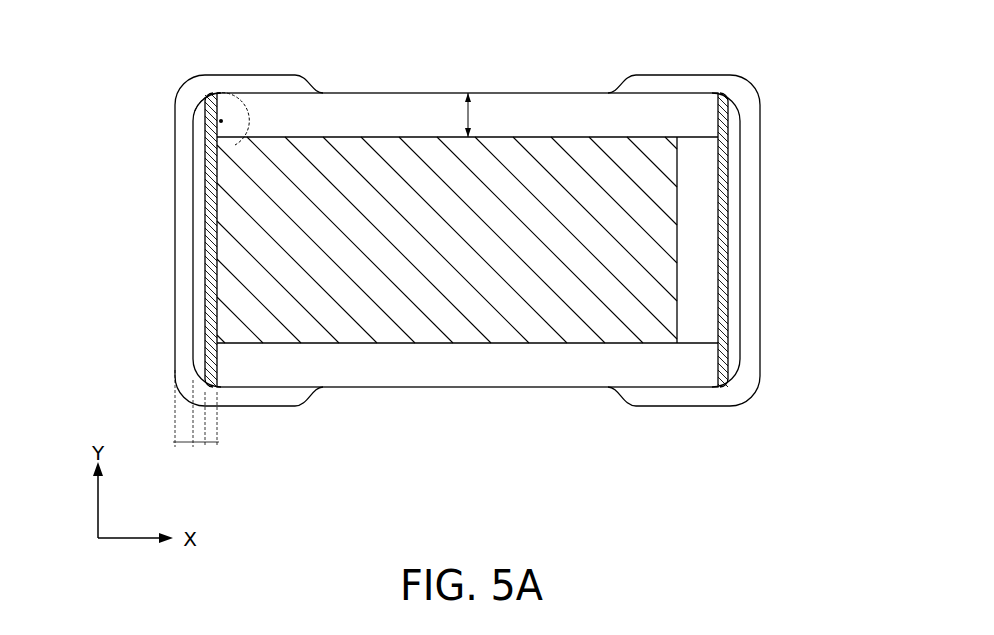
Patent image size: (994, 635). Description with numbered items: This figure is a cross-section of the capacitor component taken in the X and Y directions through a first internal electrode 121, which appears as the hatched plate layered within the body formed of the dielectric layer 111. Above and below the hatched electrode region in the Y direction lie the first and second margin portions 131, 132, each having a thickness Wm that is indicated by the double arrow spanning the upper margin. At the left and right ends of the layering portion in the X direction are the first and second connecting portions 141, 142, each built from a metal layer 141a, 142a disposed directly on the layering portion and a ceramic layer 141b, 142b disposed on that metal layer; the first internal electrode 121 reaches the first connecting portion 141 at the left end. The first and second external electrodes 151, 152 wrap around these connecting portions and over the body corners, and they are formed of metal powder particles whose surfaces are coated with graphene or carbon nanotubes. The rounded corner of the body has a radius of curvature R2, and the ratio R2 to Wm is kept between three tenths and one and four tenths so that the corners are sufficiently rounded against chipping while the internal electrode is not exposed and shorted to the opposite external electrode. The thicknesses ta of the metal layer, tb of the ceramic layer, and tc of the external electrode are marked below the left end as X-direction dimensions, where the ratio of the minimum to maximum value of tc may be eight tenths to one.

The dielectric layer 111 is at (698, 323).
The first internal electrode 121 is at (450, 320).
The first margin portion 131 is at (537, 362).
The second margin portion 132 is at (579, 112).
The first connecting portion 141 is at (98, 170).
The metal layer 141a is at (210, 184).
The ceramic layer 141b is at (198, 240).
The second connecting portion 142 is at (835, 170).
The metal layer 142a is at (723, 184).
The ceramic layer 142b is at (734, 238).
The first external electrode 151 is at (223, 88).
The second external electrode 152 is at (690, 90).
The radius of curvature of a corner of the body R2 is at (258, 97).
The thickness of the margin portion Wm is at (472, 117).
The thickness of the metal layer ta is at (212, 448).
The thickness of the ceramic layer tb is at (199, 448).
The thickness of the external electrode tc is at (181, 448).